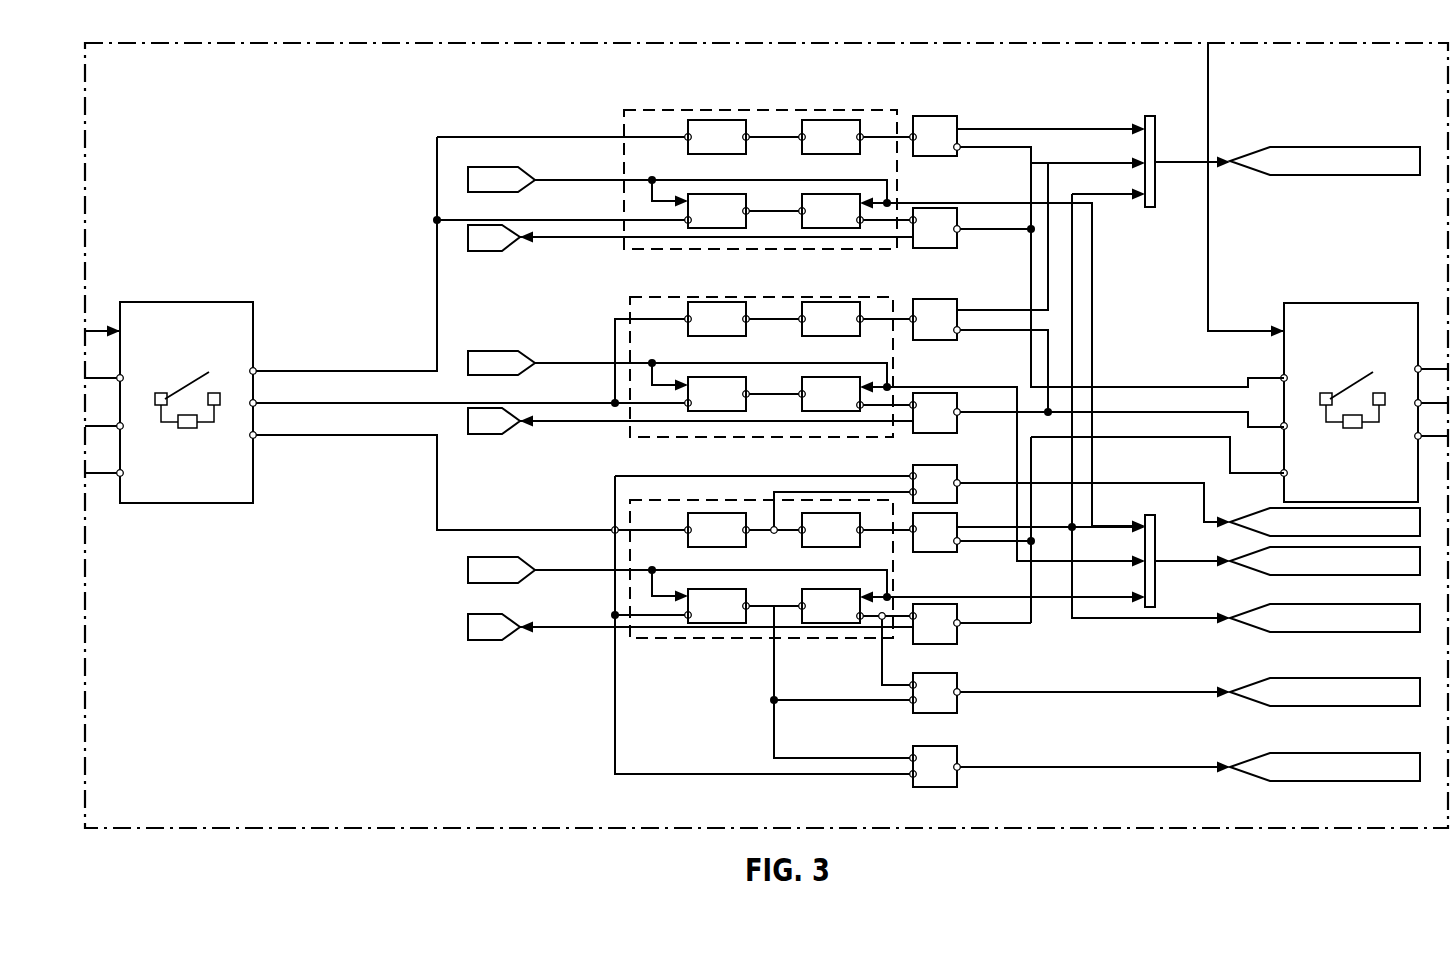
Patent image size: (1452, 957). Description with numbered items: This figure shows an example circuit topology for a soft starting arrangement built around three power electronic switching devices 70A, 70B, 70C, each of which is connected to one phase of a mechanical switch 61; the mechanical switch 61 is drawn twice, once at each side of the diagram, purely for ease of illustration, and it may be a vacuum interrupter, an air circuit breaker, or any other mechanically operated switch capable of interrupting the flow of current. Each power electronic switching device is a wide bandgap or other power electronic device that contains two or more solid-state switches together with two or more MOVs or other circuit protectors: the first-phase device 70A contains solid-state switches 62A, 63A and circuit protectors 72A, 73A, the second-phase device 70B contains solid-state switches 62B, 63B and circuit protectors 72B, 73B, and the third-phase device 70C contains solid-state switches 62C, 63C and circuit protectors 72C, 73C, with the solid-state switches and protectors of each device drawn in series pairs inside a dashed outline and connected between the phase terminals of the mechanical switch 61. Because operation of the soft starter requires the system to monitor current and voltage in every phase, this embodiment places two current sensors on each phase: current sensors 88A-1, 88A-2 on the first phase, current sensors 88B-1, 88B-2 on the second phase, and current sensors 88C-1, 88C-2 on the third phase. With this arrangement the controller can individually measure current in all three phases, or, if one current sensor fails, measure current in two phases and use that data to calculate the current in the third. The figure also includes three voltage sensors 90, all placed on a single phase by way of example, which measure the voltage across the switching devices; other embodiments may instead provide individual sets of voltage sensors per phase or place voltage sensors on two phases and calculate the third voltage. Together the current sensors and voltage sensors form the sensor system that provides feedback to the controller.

The mechanical switch 61 is at (192, 301).
The power electronic switching device 70A is at (686, 109).
The power electronic switching device 70B is at (629, 338).
The power electronic switching device 70C is at (704, 640).
The circuit protector 72A is at (717, 136).
The circuit protector 73A is at (831, 136).
The solid-state switch 62A is at (717, 210).
The solid-state switch 63A is at (831, 210).
The circuit protector 72B is at (717, 318).
The circuit protector 73B is at (831, 318).
The solid-state switch 62B is at (717, 393).
The solid-state switch 63B is at (831, 393).
The circuit protector 72C is at (717, 529).
The circuit protector 73C is at (831, 529).
The solid-state switch 62C is at (717, 605).
The solid-state switch 63C is at (831, 605).
The current sensor 88A-2 is at (954, 158).
The current sensor 88A-1 is at (954, 250).
The current sensor 88B-2 is at (954, 339).
The current sensor 88B-1 is at (954, 433).
The current sensor 88C-2 is at (954, 552).
The current sensor 88C-1 is at (994, 634).
The voltage sensor 90 is at (951, 643).